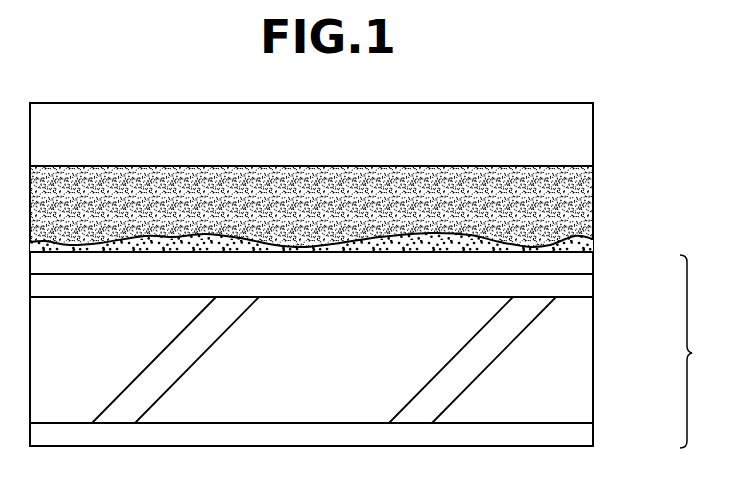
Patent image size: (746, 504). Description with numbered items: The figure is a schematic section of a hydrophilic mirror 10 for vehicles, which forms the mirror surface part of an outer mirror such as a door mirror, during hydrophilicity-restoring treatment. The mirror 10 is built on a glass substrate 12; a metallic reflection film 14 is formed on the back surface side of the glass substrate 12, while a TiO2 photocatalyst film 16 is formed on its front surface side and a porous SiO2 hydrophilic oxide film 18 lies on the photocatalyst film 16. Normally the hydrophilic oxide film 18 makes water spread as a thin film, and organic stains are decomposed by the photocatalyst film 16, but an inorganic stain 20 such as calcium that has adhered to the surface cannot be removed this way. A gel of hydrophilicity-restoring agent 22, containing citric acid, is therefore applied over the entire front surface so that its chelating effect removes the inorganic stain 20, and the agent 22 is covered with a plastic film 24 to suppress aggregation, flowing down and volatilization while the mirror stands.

The hydrophilic mirror 10 is at (702, 351).
The glass substrate 12 is at (575, 365).
The metallic reflection film 14 is at (578, 433).
The TiO2 photocatalyst film 16 is at (573, 286).
The porous SiO2 hydrophilic oxide film 18 is at (573, 264).
The inorganic stain 20 is at (575, 244).
The hydrophilicity-restoring agent 22 is at (572, 205).
The plastic film 24 is at (572, 139).